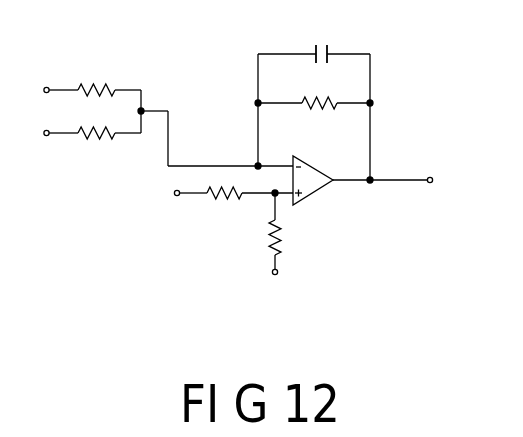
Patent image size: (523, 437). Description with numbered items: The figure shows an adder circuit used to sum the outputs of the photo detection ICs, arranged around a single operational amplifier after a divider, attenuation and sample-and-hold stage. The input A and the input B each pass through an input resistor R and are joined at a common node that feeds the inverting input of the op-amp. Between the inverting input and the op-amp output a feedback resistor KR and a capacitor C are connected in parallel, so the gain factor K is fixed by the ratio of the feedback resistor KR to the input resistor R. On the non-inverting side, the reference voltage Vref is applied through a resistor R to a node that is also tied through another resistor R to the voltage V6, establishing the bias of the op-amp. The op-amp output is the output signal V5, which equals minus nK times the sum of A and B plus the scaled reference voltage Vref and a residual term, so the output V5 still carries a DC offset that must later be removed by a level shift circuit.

The input A is at (52, 90).
The input B is at (52, 133).
The resistor R is at (190, 155).
The capacitor C is at (314, 40).
The feedback resistor KR is at (314, 90).
The output signal V5 is at (396, 183).
The reference voltage Vref is at (164, 197).
The voltage V6 is at (273, 283).